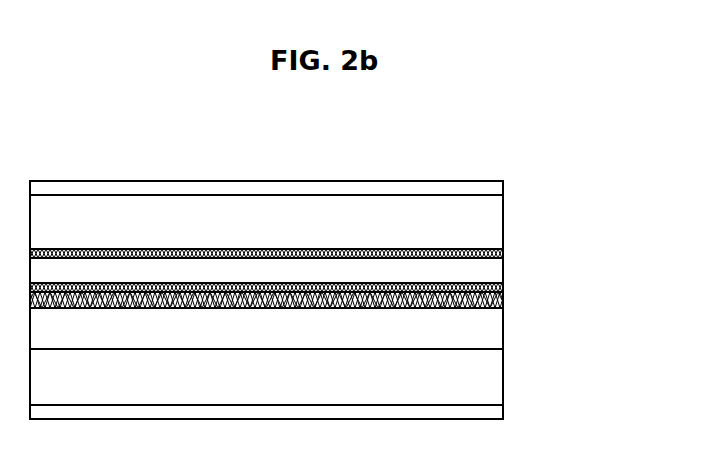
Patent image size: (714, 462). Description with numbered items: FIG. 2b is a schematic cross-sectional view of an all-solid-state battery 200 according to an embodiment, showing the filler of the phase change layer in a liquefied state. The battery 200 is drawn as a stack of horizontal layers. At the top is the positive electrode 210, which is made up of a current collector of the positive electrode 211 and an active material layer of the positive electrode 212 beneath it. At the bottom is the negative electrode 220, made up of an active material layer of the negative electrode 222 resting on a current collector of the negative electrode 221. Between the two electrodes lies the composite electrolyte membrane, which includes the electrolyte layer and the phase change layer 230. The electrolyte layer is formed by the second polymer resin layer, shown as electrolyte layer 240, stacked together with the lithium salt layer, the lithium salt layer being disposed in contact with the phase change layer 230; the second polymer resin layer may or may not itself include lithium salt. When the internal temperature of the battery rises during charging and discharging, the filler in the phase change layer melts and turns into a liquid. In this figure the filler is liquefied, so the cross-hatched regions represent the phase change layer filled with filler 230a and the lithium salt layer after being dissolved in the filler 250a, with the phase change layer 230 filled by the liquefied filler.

The battery 200 is at (92, 147).
The positive electrode 210 is at (564, 181).
The current collector of positive electrode 211 is at (503, 185).
The active material layer of positive electrode 212 is at (503, 222).
The negative electrode 220 is at (564, 369).
The current collector of negative electrode 221 is at (503, 409).
The active material layer of negative electrode 222 is at (503, 379).
The phase change layer 230 is at (503, 268).
The phase change layer filled with filler 230a is at (503, 251).
The electrolyte layer 240 is at (503, 334).
The lithium salt layer after being dissolved in the filler 250a is at (503, 309).